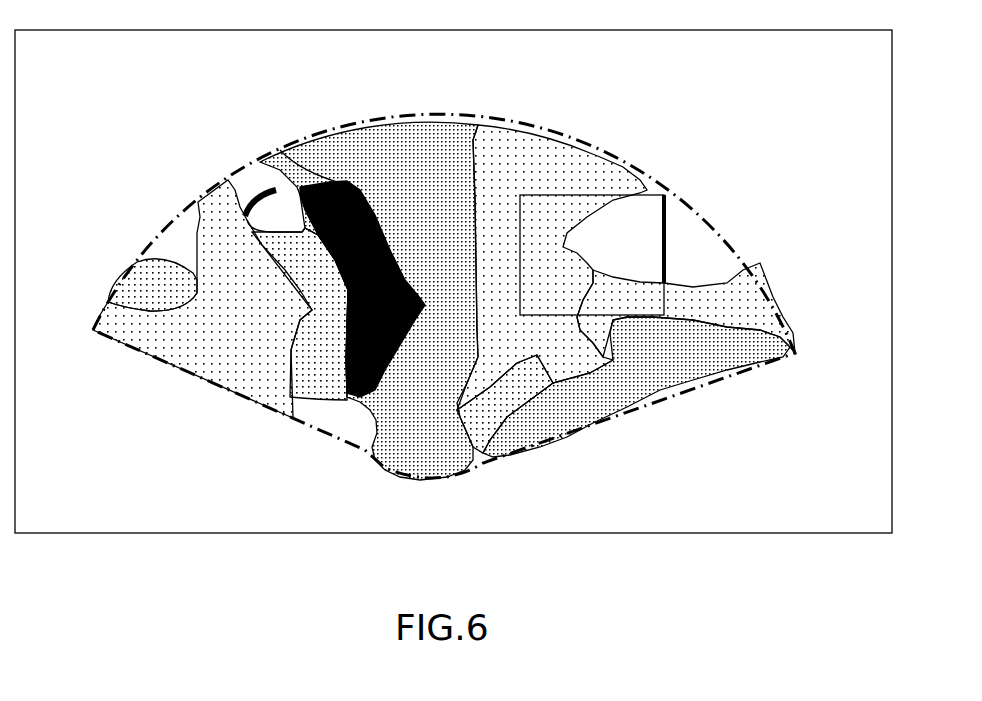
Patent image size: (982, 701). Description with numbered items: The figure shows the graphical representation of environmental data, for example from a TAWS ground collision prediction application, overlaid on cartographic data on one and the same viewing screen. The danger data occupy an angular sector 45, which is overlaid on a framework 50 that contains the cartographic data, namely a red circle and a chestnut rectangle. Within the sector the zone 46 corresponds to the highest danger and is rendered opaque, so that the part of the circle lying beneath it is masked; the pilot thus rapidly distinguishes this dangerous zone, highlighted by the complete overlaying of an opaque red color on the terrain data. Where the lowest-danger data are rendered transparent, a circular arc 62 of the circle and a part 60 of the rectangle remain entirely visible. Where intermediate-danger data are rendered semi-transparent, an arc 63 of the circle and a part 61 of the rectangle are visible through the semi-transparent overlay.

The angular sector 45 is at (419, 303).
The zone 46 is at (349, 395).
The framework 50 is at (115, 553).
The entirely visible part 60 is at (668, 193).
The part visible by semi-transparency 61 is at (597, 158).
The entirely visible circular arc 62 is at (250, 195).
The arc visible by semi-transparency 63 is at (197, 243).